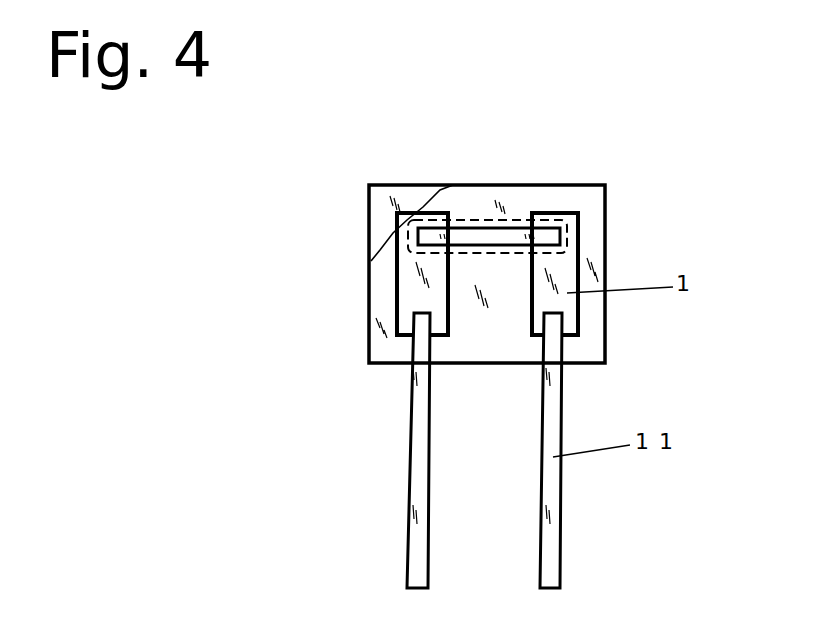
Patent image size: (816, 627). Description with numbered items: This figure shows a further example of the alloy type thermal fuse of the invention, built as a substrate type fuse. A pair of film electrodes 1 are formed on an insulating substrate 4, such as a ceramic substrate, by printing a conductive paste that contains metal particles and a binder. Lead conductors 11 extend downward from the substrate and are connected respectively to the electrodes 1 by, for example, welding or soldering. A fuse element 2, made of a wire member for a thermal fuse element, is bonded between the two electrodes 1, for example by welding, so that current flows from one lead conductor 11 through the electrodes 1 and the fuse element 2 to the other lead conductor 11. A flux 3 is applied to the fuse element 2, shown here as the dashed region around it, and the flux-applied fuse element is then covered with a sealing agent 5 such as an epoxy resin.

The film electrode 1 is at (403, 278).
The fuse element 2 is at (468, 238).
The flux 3 is at (497, 220).
The insulating substrate 4 is at (593, 220).
The sealing agent 5 is at (387, 213).
The lead conductor 11 is at (407, 450).